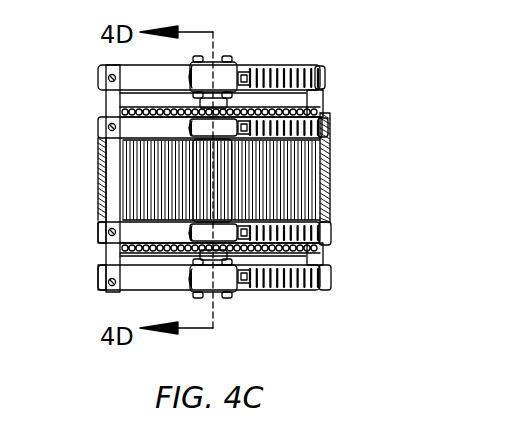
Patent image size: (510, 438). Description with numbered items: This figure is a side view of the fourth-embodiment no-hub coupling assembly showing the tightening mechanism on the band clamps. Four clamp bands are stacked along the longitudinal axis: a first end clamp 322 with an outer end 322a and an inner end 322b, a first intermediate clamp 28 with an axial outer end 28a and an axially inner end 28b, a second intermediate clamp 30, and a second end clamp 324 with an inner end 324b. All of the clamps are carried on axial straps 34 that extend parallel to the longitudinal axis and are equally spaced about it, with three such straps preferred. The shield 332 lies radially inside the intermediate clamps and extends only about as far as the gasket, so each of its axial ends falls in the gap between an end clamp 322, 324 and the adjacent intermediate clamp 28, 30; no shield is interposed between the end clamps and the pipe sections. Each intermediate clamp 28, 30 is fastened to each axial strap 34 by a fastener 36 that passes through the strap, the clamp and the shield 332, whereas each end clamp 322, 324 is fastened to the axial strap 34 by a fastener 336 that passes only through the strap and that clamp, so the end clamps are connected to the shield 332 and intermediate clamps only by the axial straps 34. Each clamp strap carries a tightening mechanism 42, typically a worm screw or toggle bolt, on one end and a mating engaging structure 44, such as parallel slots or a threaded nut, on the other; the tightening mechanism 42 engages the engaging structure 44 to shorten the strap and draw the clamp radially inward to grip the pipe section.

The first end clamp 322 is at (328, 71).
The outer end of first end clamp 322a is at (327, 66).
The inner end of first end clamp 322b is at (330, 92).
The first intermediate clamp 28 is at (330, 130).
The axial outer end of first intermediate clamp 28a is at (330, 115).
The axially inner end of first intermediate clamp 28b is at (330, 148).
The shield 332 is at (140, 178).
The second intermediate clamp 30 is at (328, 238).
The second end clamp 324 is at (330, 280).
The inner end of second end clamp 324b is at (327, 268).
The axial strap 34 is at (112, 200).
The fastener 36 is at (102, 237).
The fastener 336 is at (110, 285).
The tightening mechanism 42 is at (223, 282).
The engaging structure 44 is at (292, 292).